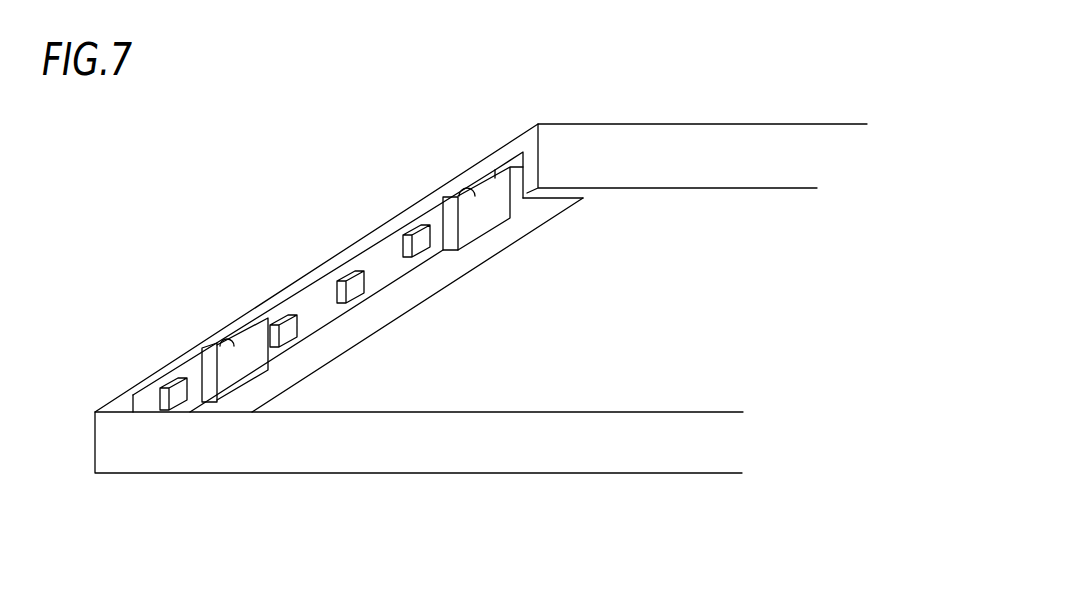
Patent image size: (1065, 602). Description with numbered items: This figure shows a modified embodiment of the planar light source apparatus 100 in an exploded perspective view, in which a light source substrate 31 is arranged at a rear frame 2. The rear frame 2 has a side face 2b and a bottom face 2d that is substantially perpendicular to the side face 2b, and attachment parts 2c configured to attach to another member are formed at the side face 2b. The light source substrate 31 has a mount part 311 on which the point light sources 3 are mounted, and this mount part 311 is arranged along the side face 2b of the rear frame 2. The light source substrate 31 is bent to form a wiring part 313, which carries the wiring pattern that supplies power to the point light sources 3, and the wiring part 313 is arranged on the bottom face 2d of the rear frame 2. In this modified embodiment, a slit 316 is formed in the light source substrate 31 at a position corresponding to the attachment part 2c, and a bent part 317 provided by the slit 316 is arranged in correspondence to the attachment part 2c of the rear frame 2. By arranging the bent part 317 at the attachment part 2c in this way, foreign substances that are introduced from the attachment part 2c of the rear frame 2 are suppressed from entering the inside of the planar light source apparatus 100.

The planar light source apparatus 100 is at (452, 302).
The rear frame 2 is at (270, 448).
The side face 2b is at (403, 225).
The attachment part 2c is at (232, 357).
The bottom face 2d is at (688, 212).
The point light source 3 is at (417, 240).
The light source substrate 31 is at (217, 372).
The mount part 311 is at (521, 148).
The wiring part 313 is at (548, 200).
The slit 316 is at (152, 400).
The bent part 317 is at (228, 340).